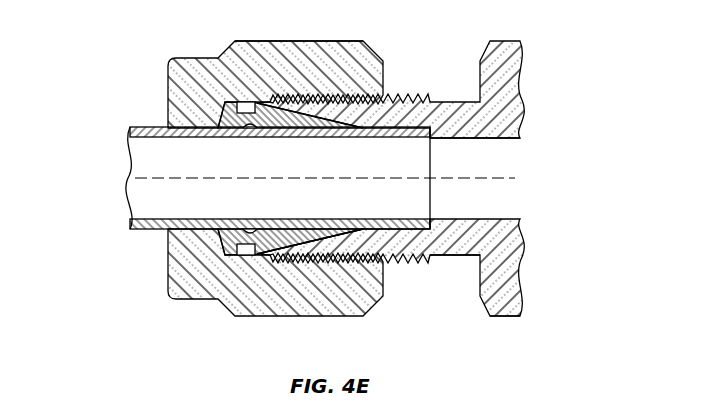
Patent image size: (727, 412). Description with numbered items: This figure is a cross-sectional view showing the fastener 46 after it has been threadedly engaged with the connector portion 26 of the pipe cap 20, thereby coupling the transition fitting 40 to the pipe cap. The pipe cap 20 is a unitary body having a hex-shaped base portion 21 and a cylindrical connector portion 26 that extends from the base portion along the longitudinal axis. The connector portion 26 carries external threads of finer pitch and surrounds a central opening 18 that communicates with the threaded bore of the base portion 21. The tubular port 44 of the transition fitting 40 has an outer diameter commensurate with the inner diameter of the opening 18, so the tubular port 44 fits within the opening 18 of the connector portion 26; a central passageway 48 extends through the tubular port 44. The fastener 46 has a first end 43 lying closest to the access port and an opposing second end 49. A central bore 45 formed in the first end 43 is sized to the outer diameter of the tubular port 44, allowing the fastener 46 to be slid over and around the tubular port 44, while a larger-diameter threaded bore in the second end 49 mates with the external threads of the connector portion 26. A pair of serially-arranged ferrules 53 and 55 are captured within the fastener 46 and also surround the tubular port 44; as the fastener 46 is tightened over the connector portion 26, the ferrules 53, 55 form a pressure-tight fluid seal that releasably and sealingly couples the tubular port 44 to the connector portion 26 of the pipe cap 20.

The central opening 18 is at (448, 219).
The pipe cap 20 is at (540, 105).
The base portion 21 is at (502, 318).
The connector portion 26 is at (450, 256).
The transition fitting 40 is at (148, 127).
The first end 43 is at (168, 88).
The tubular port 44 is at (431, 137).
The central bore 45 is at (163, 234).
The fastener 46 is at (302, 41).
The central passageway 48 is at (382, 218).
The second end 49 is at (385, 90).
The ferrule 53 is at (230, 257).
The ferrule 55 is at (300, 254).